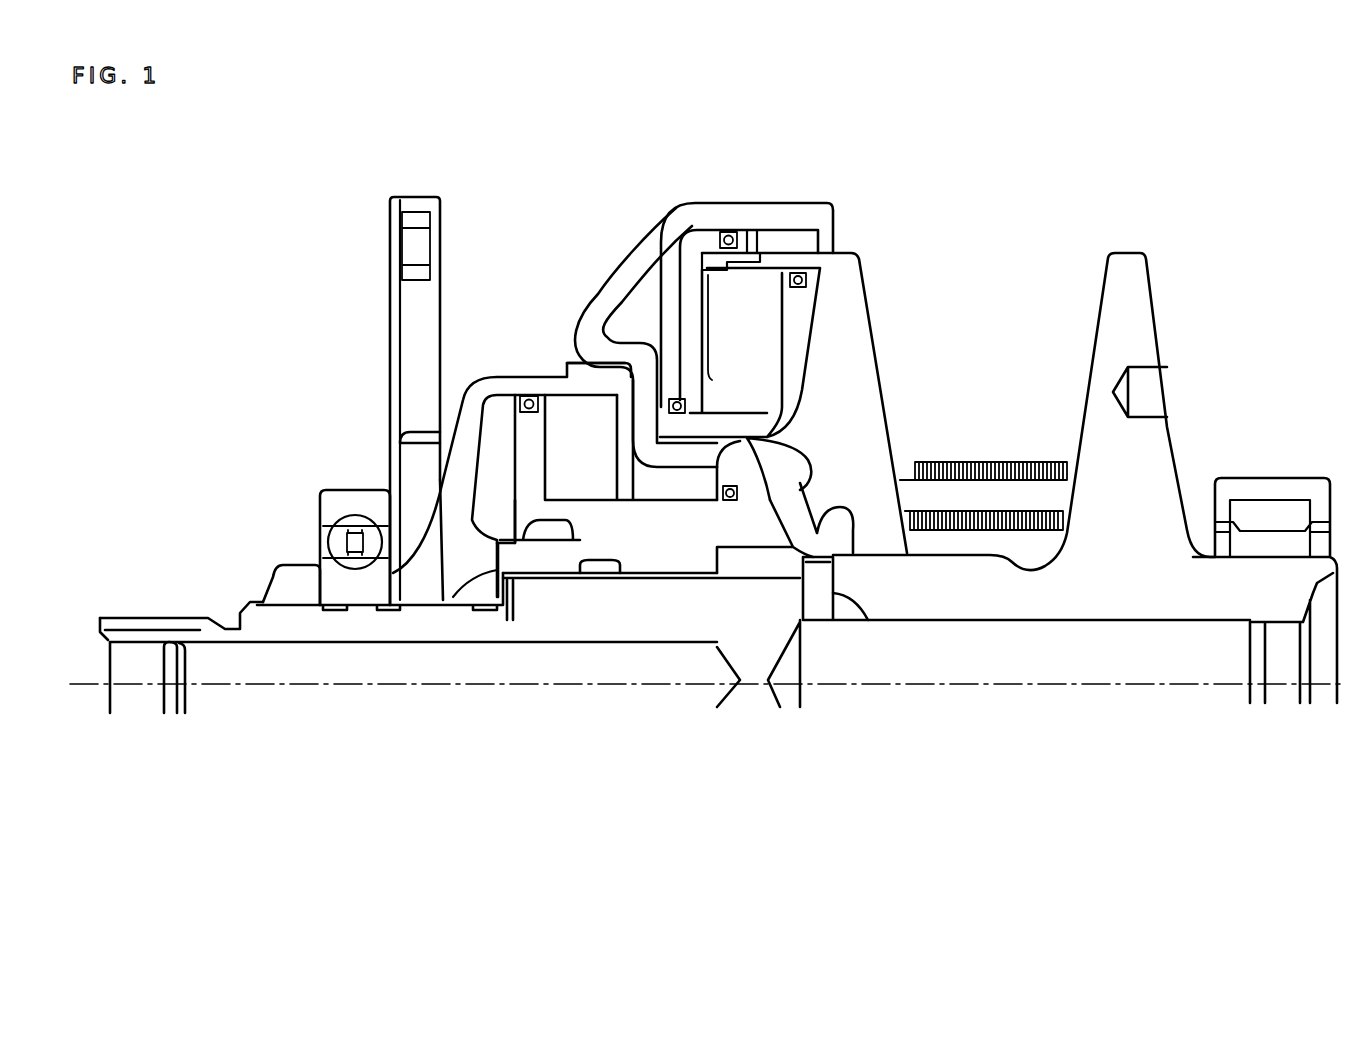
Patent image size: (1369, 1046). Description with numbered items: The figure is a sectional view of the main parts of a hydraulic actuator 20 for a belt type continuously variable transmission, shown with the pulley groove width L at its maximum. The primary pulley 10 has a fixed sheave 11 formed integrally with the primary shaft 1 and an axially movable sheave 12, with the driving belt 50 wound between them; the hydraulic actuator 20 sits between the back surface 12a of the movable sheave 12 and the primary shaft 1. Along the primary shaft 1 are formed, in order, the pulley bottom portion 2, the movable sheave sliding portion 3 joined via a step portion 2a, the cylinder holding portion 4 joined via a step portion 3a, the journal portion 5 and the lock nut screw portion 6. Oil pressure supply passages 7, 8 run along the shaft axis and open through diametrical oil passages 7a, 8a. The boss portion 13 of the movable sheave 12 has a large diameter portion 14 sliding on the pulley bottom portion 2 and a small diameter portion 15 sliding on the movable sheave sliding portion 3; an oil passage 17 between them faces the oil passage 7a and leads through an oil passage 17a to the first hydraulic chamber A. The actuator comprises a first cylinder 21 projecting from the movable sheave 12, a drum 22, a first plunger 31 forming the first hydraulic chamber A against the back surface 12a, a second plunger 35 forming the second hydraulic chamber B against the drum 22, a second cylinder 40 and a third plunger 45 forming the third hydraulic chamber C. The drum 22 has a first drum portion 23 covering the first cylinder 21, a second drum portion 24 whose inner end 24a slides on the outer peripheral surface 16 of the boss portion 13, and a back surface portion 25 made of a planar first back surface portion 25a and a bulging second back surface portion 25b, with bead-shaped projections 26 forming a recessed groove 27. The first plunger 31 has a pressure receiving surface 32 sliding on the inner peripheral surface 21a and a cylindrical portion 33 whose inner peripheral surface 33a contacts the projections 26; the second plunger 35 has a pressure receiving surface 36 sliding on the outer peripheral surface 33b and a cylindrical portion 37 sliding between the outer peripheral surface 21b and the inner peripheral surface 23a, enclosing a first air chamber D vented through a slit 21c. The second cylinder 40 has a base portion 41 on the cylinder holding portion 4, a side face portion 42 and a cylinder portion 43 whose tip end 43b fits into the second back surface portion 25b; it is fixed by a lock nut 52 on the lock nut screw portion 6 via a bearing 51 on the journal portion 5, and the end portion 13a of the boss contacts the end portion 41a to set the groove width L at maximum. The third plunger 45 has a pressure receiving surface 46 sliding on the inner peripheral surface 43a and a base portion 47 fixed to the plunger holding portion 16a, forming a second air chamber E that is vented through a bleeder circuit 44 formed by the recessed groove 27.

The primary shaft 1 is at (148, 613).
The pulley bottom portion 2 is at (987, 560).
The step portion 2a is at (799, 683).
The movable sheave sliding portion 3 is at (601, 600).
The step portion 3a is at (497, 612).
The cylinder holding portion 4 is at (408, 607).
The journal portion 5 is at (365, 610).
The lock nut screw portion 6 is at (297, 610).
The oil pressure supply passage 7 is at (1213, 665).
The oil passage 7a is at (866, 560).
The oil pressure supply passage 8 is at (202, 673).
The oil passage 8a is at (513, 640).
The primary pulley 10 is at (1142, 239).
The fixed sheave 11 is at (1150, 273).
The movable sheave 12 is at (871, 272).
The back surface 12a is at (877, 300).
The boss portion 13 is at (633, 575).
The end portion 13a is at (533, 590).
The large diameter portion 14 is at (890, 558).
The small diameter portion 15 is at (699, 470).
The outer peripheral surface 16 is at (659, 528).
The plunger holding portion 16a is at (568, 575).
The oil passage 17 is at (772, 580).
The oil passage 17a is at (883, 558).
The hydraulic actuator 20 is at (671, 192).
The first cylinder 21 is at (782, 262).
The inner peripheral surface 21a is at (830, 272).
The outer peripheral surface 21b is at (800, 262).
The slit 21c is at (725, 275).
The drum 22 is at (685, 199).
The first drum portion 23 is at (742, 227).
The inner peripheral surface 23a is at (771, 250).
The second drum portion 24 is at (712, 548).
The inner end 24a is at (775, 478).
The back surface portion 25 is at (504, 216).
The first back surface portion 25a is at (628, 338).
The second back surface portion 25b is at (615, 300).
The projection 26 is at (677, 470).
The recessed groove 27 is at (574, 328).
The first plunger 31 is at (806, 387).
The pressure receiving surface 32 is at (817, 323).
The cylindrical portion 33 is at (810, 427).
The inner peripheral surface 33a is at (748, 443).
The outer peripheral surface 33b is at (745, 413).
The second plunger 35 is at (667, 286).
The pressure receiving surface 36 is at (663, 257).
The cylindrical portion 37 is at (712, 232).
The second cylinder 40 is at (461, 396).
The base portion 41 is at (430, 597).
The end portion 41a is at (448, 580).
The side face portion 42 is at (463, 418).
The cylinder portion 43 is at (487, 373).
The inner peripheral surface 43a is at (603, 383).
The tip end 43b is at (592, 372).
The bleeder circuit 44 is at (588, 357).
The third plunger 45 is at (557, 462).
The pressure receiving surface 46 is at (447, 423).
The base portion 47 is at (553, 525).
The driving belt 50 is at (1048, 458).
The bearing 51 is at (332, 573).
The lock nut 52 is at (268, 578).
The first hydraulic chamber A is at (794, 453).
The second hydraulic chamber B is at (666, 256).
The third hydraulic chamber C is at (499, 448).
The first air chamber D is at (875, 275).
The second air chamber E is at (509, 488).
The pulley groove width L is at (880, 313).